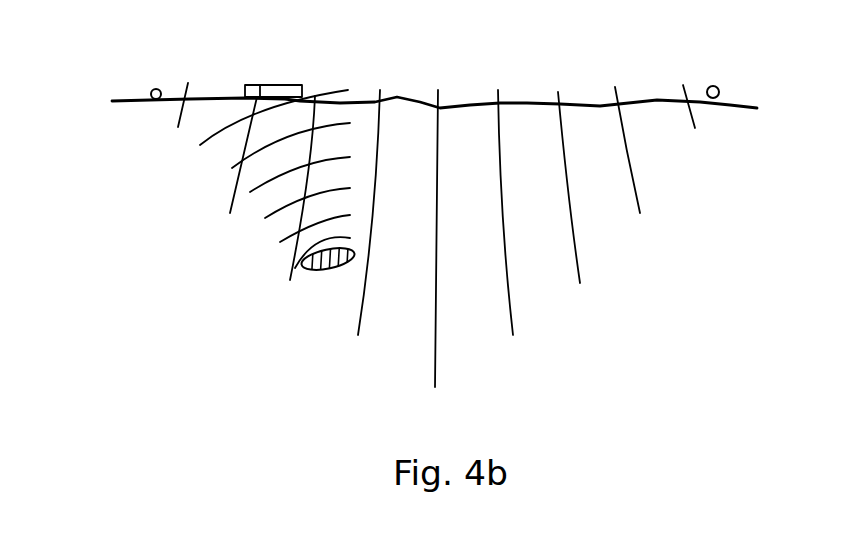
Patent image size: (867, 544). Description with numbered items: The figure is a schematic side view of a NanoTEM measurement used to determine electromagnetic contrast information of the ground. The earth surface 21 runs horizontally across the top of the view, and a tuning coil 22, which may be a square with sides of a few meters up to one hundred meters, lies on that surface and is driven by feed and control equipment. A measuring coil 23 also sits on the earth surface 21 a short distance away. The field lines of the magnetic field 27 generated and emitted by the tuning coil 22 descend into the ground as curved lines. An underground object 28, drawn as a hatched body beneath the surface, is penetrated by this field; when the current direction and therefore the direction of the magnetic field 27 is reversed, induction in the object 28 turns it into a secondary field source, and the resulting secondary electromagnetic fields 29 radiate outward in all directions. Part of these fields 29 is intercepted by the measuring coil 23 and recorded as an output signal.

The earth surface 21 is at (668, 98).
The tuning coil 22 is at (147, 92).
The measuring coil 23 is at (285, 84).
The field lines of a magnetic field 27 is at (640, 212).
The underground object 28 is at (317, 274).
The secondary electromagnetic fields 29 is at (258, 190).